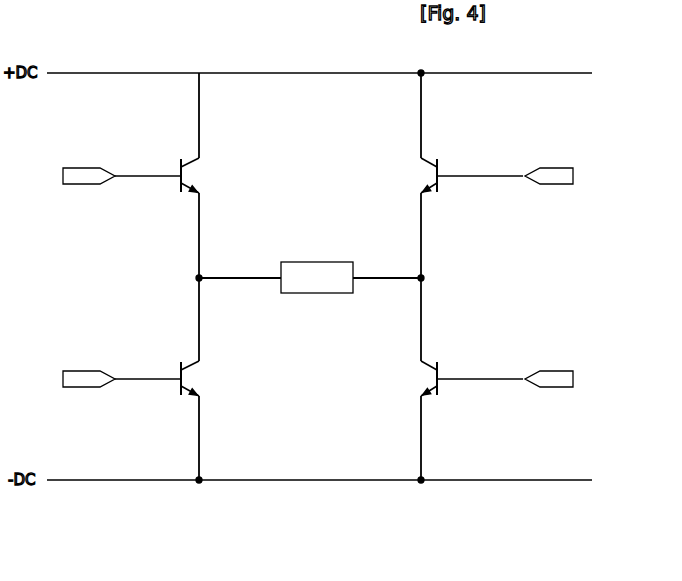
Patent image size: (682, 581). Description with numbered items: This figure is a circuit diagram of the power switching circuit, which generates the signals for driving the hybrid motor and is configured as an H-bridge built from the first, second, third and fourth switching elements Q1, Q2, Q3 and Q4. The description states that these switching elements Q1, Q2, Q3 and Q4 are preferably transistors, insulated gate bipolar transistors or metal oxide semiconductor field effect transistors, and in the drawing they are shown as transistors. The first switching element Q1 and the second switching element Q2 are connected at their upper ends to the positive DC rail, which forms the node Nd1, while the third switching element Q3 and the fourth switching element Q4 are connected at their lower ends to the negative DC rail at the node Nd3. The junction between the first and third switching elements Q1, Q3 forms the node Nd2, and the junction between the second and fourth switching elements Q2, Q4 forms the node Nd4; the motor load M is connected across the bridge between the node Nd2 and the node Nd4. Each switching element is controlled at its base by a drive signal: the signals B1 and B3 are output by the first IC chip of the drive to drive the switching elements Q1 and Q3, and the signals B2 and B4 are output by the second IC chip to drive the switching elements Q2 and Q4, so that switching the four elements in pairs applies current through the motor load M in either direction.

The first switching element Q1 is at (201, 175).
The second switching element Q2 is at (416, 175).
The third switching element Q3 is at (201, 378).
The fourth switching element Q4 is at (416, 378).
The signal for driving switching element Q1 B1 is at (76, 176).
The signal for driving switching element Q2 B2 is at (562, 176).
The signal for driving switching element Q3 B3 is at (76, 379).
The signal for driving switching element Q4 B4 is at (562, 379).
The first node Nd1 is at (423, 72).
The second node Nd2 is at (197, 277).
The third node Nd3 is at (300, 482).
The fourth node Nd4 is at (423, 278).
The motor M is at (317, 277).